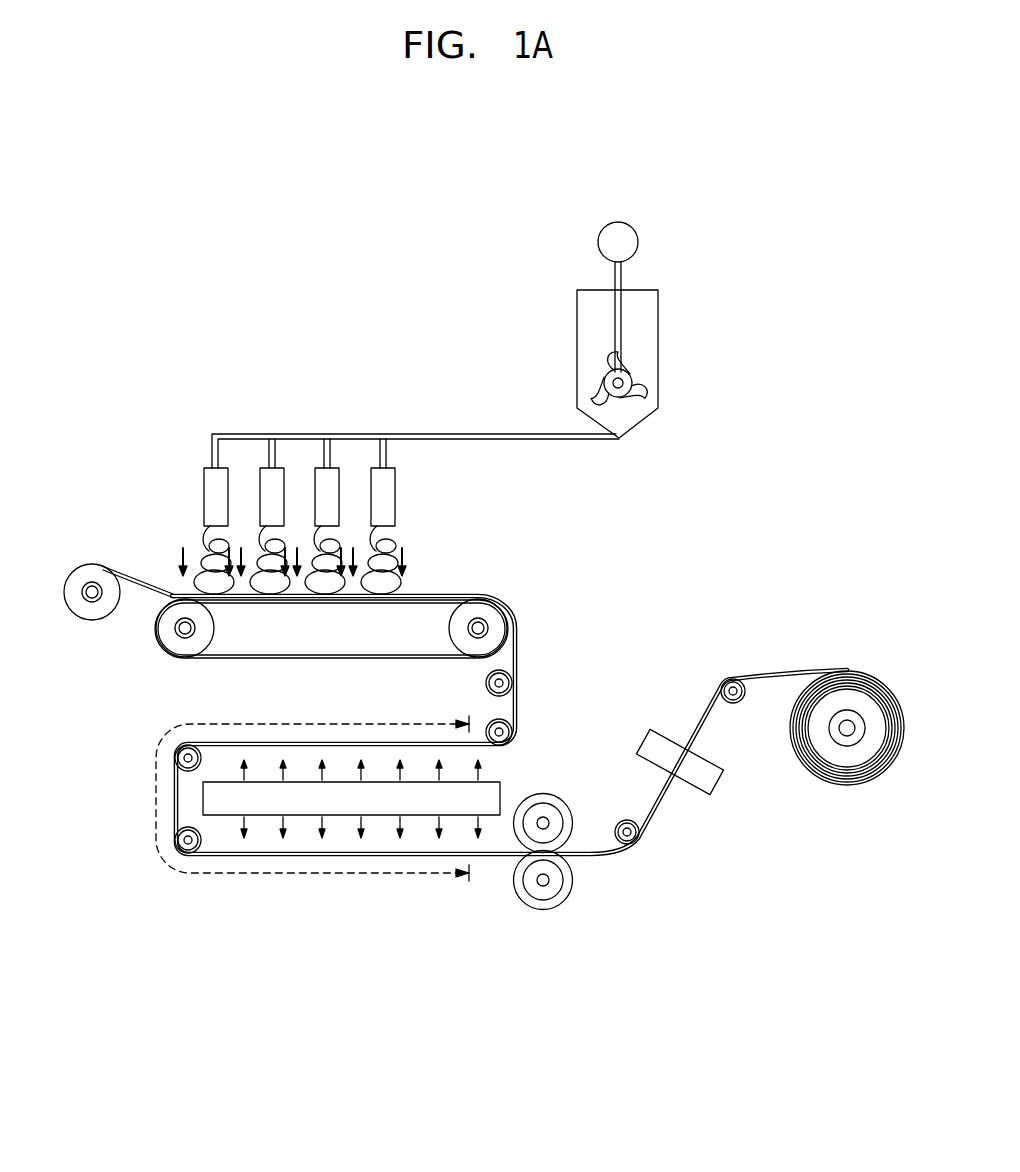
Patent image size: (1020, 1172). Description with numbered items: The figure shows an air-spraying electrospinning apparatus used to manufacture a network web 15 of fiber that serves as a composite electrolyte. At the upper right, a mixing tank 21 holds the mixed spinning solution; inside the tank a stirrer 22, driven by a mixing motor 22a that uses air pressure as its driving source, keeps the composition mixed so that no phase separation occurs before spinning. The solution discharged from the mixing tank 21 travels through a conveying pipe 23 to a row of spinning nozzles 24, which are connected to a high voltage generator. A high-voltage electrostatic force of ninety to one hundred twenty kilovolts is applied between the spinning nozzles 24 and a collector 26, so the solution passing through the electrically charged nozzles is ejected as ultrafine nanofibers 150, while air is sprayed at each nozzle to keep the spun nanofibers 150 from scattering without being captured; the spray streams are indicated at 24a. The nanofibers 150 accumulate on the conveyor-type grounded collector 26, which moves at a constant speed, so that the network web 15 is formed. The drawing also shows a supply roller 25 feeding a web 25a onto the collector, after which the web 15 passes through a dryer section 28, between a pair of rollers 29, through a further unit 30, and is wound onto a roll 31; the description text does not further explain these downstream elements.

The network web 15 is at (513, 602).
The mixing tank 21 is at (658, 328).
The stirrer 22 is at (648, 377).
The mixing motor 22a is at (638, 242).
The conveying pipe 23 is at (479, 434).
The spinning nozzles 24 is at (396, 488).
The spray stream 24a is at (325, 557).
The ultrafine nanofibers 150 is at (394, 541).
The supply roller 25 is at (78, 567).
The fed web 25a is at (135, 577).
The collector 26 is at (424, 599).
The heater / dryer 28 is at (307, 806).
The pressing rollers 29 is at (582, 928).
The processing unit 30 is at (694, 772).
The winding roll 31 is at (860, 703).